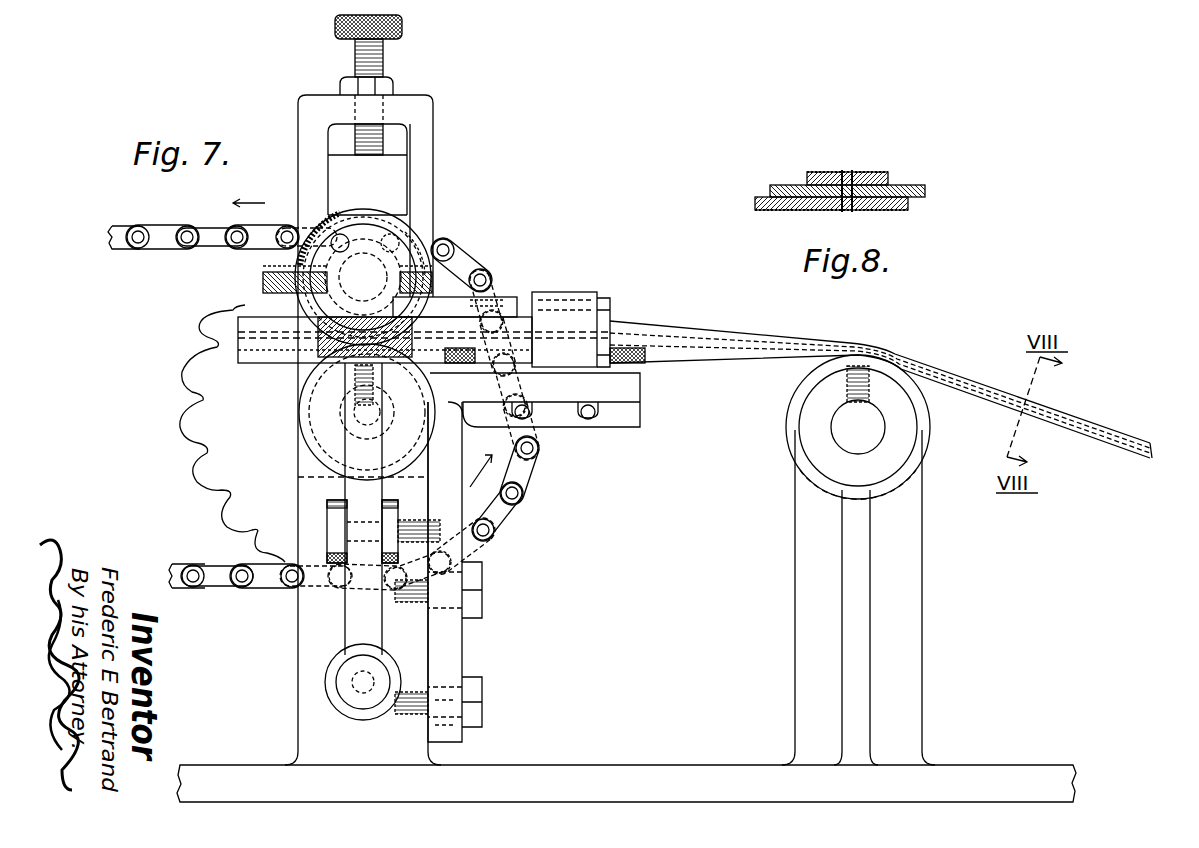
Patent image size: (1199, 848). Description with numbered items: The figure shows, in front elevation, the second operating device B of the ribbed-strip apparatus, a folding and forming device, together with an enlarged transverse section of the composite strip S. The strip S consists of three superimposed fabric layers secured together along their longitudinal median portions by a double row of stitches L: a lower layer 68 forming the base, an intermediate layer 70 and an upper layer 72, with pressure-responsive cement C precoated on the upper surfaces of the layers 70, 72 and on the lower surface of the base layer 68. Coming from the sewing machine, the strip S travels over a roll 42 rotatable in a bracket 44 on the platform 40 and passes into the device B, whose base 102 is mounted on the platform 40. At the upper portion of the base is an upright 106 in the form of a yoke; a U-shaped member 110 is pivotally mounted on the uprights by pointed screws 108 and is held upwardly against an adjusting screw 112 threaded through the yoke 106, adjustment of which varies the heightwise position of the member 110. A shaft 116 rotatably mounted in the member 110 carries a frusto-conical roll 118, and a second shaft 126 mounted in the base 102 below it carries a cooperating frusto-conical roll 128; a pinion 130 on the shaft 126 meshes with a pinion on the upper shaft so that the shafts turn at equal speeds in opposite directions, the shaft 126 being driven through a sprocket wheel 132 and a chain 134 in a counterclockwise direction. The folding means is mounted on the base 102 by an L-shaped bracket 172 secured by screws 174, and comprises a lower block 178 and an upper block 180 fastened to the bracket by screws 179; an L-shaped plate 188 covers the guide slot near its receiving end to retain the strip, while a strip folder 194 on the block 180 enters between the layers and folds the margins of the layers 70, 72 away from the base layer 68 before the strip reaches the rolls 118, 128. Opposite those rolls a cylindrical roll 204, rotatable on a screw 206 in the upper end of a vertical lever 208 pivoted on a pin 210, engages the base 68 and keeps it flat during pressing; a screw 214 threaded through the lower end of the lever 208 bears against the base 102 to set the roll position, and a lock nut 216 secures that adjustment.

In FIG. 7, the platform 40 is at (552, 772).
In FIG. 7, the roll 42 is at (791, 426).
In FIG. 7, the bracket 44 is at (903, 661).
In FIG. 7, the lower layer 68 is at (722, 356).
In FIG. 8, the lower layer 68 is at (756, 204).
In FIG. 7, the intermediate layer 70 is at (655, 326).
In FIG. 8, the intermediate layer 70 is at (770, 187).
In FIG. 7, the upper layer 72 is at (1103, 426).
In FIG. 8, the upper layer 72 is at (807, 178).
In FIG. 7, the base 102 is at (298, 718).
In FIG. 7, the upright 106 is at (428, 103).
In FIG. 7, the pointed screws 108 is at (456, 266).
In FIG. 7, the U-shaped member 110 is at (333, 182).
In FIG. 7, the adjusting screw 112 is at (381, 50).
In FIG. 7, the shaft 116 is at (424, 229).
In FIG. 7, the frusto-conical roll 118 is at (372, 215).
In FIG. 7, the shaft 126 is at (302, 432).
In FIG. 7, the frusto-conical roll 128 is at (299, 402).
In FIG. 7, the pinion 130 is at (303, 460).
In FIG. 7, the sprocket wheel 132 is at (200, 372).
In FIG. 7, the chain 134 is at (165, 224).
In FIG. 7, the L-shaped bracket 172 is at (450, 656).
In FIG. 7, the screws 174 is at (475, 588).
In FIG. 7, the lower block 178 is at (613, 364).
In FIG. 7, the screws 179 is at (588, 420).
In FIG. 7, the upper block 180 is at (604, 312).
In FIG. 7, the L-shaped plate 188 is at (552, 332).
In FIG. 7, the strip folder 194 is at (465, 308).
In FIG. 7, the cylindrical roll 204 is at (292, 358).
In FIG. 7, the screw 206 is at (318, 312).
In FIG. 7, the vertical lever 208 is at (348, 617).
In FIG. 7, the pin 210 is at (330, 530).
In FIG. 7, the screw 214 is at (336, 677).
In FIG. 7, the lock nut 216 is at (360, 722).
In FIG. 7, the second operating device B is at (375, 157).
In FIG. 7, the composite strip S is at (896, 382).
In FIG. 8, the composite strip S is at (823, 182).
In FIG. 8, the pressure-responsive cement C is at (832, 159).
In FIG. 8, the stitches L is at (854, 172).